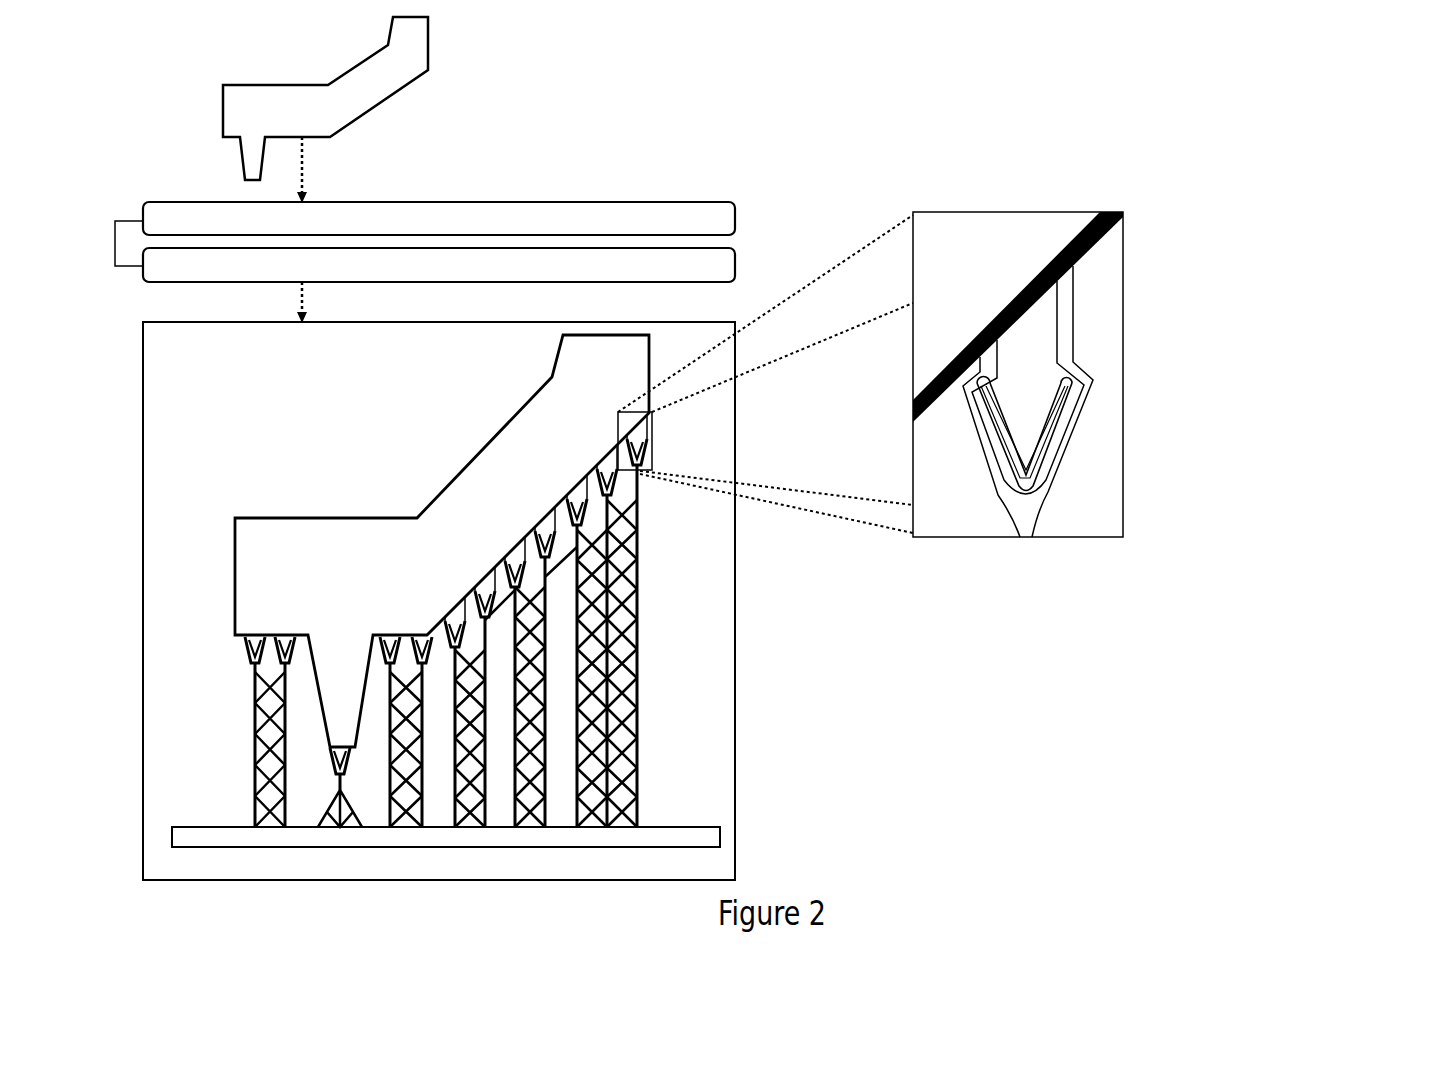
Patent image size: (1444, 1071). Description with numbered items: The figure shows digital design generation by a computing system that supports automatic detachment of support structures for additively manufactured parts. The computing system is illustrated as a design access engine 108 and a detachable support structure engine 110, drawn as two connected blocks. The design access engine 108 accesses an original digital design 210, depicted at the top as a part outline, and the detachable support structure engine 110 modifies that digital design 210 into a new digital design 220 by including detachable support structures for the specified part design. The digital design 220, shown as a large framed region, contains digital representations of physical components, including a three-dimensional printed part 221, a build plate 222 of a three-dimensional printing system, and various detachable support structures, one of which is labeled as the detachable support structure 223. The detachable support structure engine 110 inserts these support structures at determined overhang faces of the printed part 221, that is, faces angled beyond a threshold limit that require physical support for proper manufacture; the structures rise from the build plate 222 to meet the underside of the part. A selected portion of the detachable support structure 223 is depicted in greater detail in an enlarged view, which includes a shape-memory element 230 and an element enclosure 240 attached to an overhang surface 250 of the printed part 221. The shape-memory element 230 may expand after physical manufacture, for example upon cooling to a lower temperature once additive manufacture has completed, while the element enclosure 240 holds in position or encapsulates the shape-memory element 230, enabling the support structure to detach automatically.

The digital design 210 is at (282, 82).
The design access engine 108 is at (439, 218).
The detachable support structure engine 110 is at (439, 265).
The digital design 220 is at (439, 601).
The 3D printed part 221 is at (442, 541).
The build plate 222 is at (480, 848).
The detachable support structure 223 is at (635, 665).
The overhang surface 250 is at (1095, 237).
The shape-memory element 230 is at (1060, 407).
The element enclosure 240 is at (1068, 457).